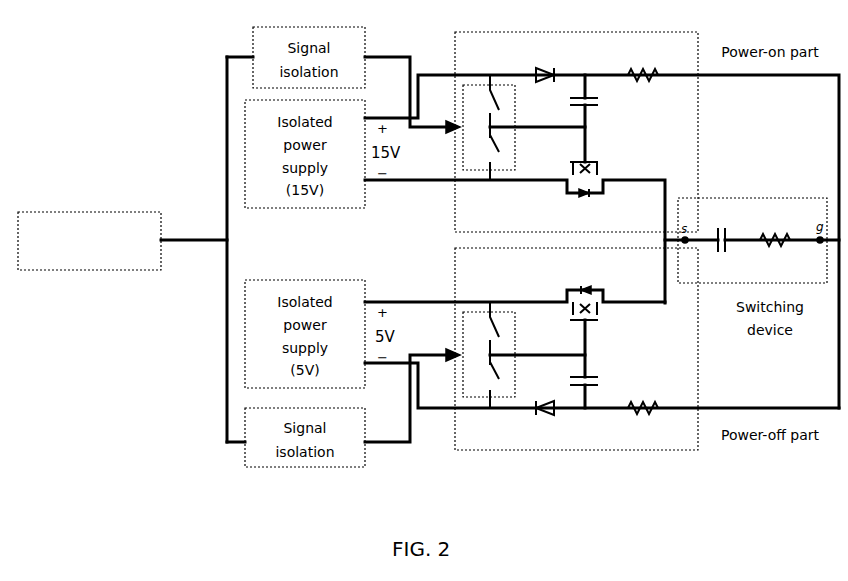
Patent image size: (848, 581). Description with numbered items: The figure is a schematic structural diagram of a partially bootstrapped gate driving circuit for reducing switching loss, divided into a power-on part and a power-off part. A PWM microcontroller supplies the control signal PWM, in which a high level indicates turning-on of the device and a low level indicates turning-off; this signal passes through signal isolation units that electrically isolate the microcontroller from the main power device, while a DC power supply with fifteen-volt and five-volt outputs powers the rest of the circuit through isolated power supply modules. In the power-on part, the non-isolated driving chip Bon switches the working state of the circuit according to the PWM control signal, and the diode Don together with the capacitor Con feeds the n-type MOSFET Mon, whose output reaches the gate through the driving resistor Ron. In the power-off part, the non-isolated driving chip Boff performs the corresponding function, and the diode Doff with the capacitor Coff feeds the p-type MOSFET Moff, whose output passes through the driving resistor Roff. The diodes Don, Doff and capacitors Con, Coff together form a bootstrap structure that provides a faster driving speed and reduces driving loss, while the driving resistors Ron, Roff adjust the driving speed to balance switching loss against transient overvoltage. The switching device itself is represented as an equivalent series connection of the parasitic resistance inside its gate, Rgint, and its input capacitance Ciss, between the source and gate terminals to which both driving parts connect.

The PWM control signal PWM is at (122, 241).
The non-isolated driving chip Bon is at (469, 127).
The non-isolated driving chip Boff is at (469, 355).
The diode Don is at (541, 62).
The driving resistor Ron is at (640, 62).
The capacitor Con is at (599, 108).
The n-type MOSFET Mon is at (582, 194).
The p-type MOSFET Moff is at (582, 288).
The capacitor Coff is at (600, 386).
The diode Doff is at (541, 423).
The driving resistor Roff is at (640, 424).
The input capacitance Ciss is at (717, 255).
The parasitic resistance inside the gate Rgint is at (773, 258).